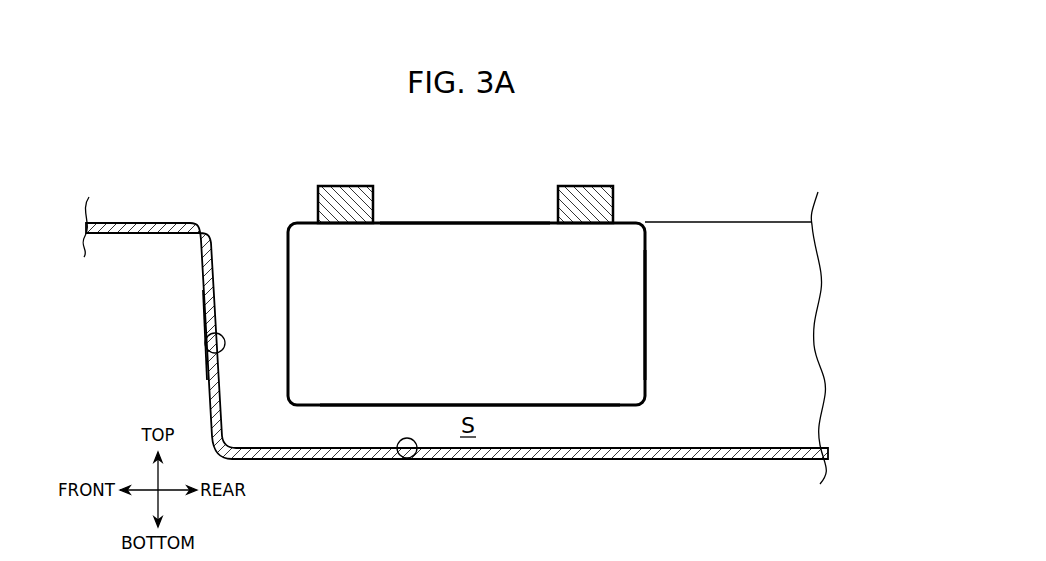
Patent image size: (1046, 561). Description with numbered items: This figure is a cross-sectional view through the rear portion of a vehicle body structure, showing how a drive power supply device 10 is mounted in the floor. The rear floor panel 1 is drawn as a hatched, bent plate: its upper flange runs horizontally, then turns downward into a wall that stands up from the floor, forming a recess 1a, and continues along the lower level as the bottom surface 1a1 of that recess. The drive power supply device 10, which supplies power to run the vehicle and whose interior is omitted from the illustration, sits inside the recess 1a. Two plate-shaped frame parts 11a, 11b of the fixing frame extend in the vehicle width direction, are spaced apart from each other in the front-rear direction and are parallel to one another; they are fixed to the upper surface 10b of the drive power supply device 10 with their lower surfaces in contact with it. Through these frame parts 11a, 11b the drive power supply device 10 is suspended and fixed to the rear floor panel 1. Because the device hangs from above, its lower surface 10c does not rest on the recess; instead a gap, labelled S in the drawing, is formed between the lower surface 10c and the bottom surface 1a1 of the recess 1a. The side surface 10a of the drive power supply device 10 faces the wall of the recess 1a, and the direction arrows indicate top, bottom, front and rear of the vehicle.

The rear floor panel 1 is at (143, 222).
The recess 1a is at (210, 346).
The bottom surface 1a1 is at (410, 458).
The drive power supply device 10 is at (658, 297).
The side surface of battery 10a is at (645, 338).
The upper surface 10b is at (462, 222).
The lower surface 10c is at (604, 405).
The frame part 11a is at (347, 186).
The frame part 11b is at (587, 186).